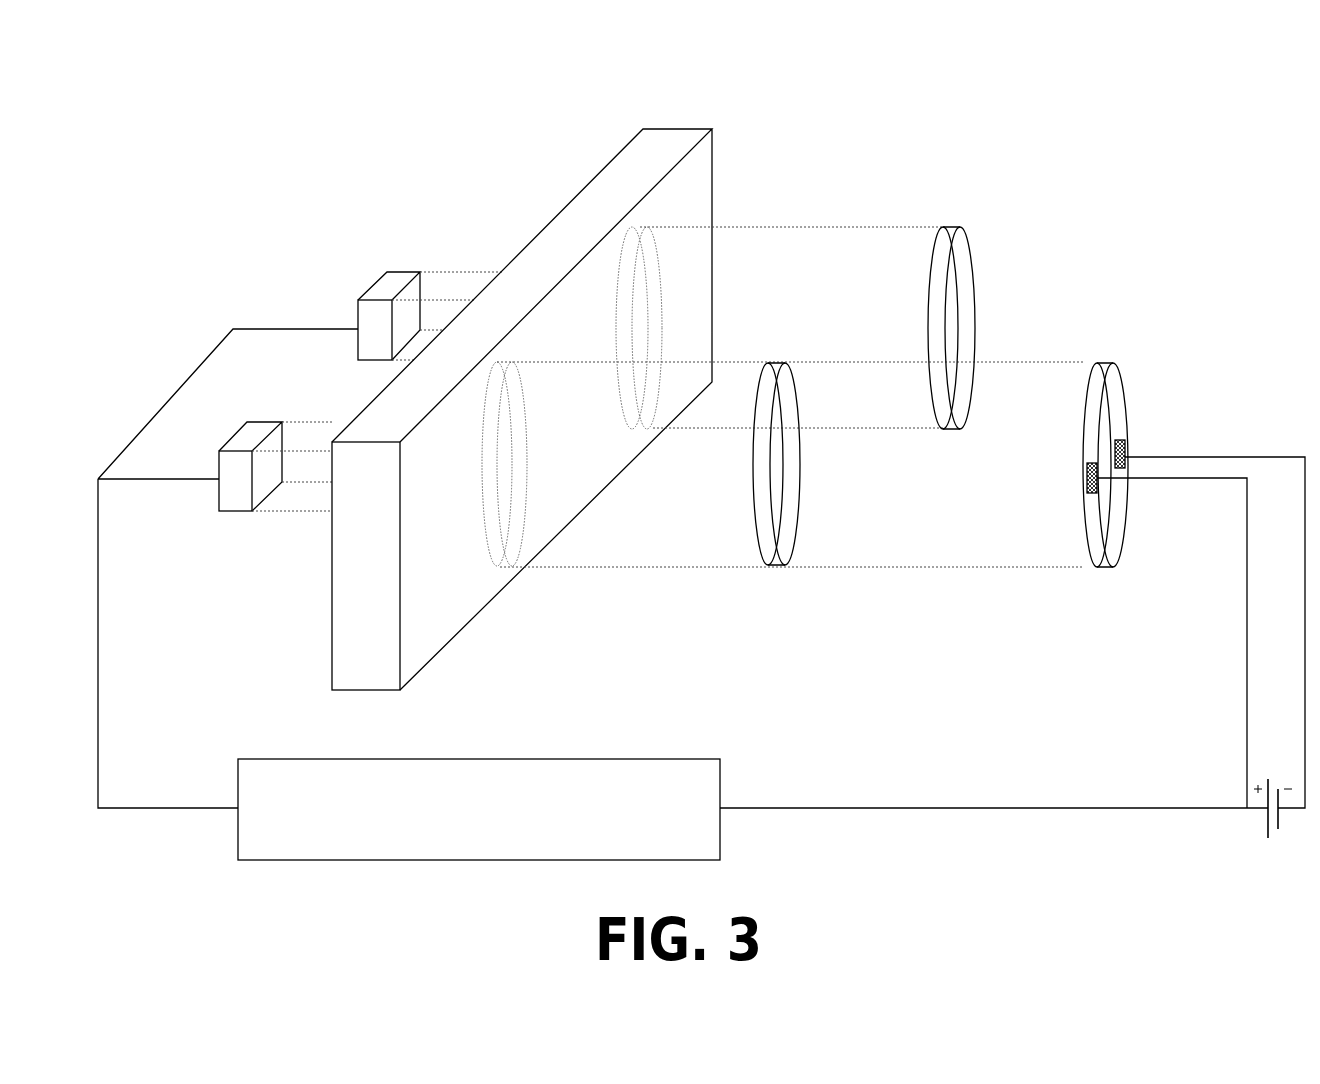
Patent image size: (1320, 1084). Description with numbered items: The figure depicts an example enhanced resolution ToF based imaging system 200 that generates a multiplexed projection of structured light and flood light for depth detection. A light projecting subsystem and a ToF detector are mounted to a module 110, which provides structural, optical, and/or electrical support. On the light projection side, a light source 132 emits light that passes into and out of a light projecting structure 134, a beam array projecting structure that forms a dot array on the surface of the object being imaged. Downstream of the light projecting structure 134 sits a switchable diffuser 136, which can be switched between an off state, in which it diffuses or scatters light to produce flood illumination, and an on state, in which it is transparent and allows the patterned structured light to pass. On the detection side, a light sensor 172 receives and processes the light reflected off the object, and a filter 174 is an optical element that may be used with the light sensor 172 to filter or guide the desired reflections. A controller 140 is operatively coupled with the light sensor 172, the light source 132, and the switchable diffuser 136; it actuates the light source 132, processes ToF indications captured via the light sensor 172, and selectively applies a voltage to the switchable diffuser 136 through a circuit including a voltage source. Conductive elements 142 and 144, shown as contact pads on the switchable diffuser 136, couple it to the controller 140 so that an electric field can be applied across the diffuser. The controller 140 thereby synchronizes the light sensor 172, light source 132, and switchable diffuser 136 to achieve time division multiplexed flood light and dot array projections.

The enhanced resolution ToF based imaging system 200 is at (1110, 145).
The module 110 is at (680, 128).
The light source 132 is at (247, 422).
The light sensor 172 is at (387, 283).
The light projecting structure 134 is at (773, 363).
The filter 174 is at (942, 227).
The switchable diffuser 136 is at (1097, 363).
The conductive element 142 is at (1087, 491).
The conductive element 144 is at (1124, 446).
The controller 140 is at (647, 758).